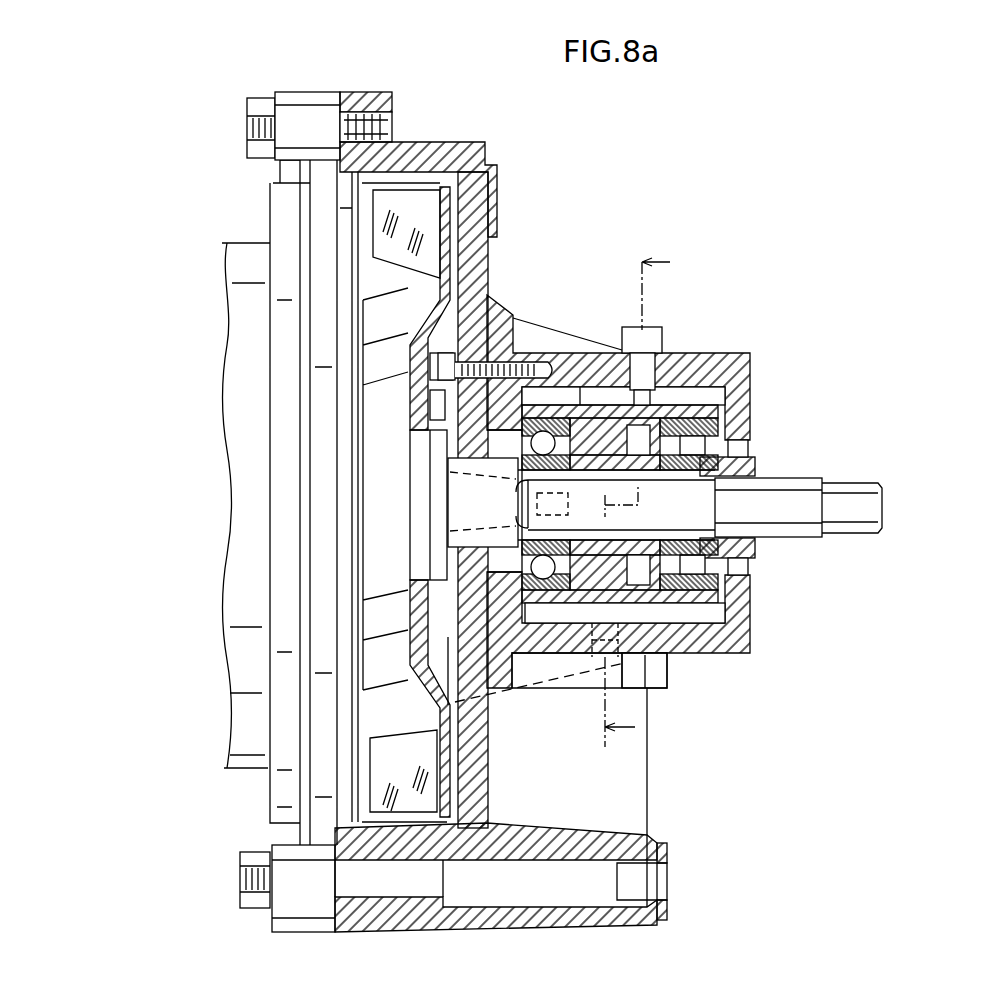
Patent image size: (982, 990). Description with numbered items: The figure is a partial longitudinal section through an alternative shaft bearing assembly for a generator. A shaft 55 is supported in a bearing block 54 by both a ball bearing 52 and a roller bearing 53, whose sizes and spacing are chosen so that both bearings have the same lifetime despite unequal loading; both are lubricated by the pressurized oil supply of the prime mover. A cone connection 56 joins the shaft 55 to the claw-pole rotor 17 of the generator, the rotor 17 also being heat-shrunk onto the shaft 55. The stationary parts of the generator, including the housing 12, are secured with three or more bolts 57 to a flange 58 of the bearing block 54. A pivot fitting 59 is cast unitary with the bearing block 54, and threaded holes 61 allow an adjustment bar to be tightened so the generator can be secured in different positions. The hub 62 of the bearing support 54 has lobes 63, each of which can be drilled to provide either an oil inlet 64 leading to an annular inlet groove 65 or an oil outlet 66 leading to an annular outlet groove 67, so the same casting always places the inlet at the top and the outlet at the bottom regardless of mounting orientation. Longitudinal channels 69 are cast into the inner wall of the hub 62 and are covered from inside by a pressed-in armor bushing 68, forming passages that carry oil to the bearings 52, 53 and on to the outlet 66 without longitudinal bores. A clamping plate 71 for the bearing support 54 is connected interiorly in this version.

The housing 12 is at (248, 505).
The claw-pole rotor 17 is at (380, 352).
The ball bearing 52 is at (556, 546).
The roller bearing 53 is at (690, 470).
The bearing block 54 is at (478, 298).
The shaft 55 is at (790, 500).
The cone connection 56 is at (480, 500).
The bolts 57 is at (262, 106).
The flange 58 is at (372, 102).
The pivot fitting 59 is at (455, 915).
The threaded holes 61 is at (500, 196).
The hub 62 is at (718, 375).
The lobes 63 is at (660, 340).
The oil inlet 64 is at (640, 376).
The annular inlet groove 65 is at (632, 476).
The oil outlet 66 is at (603, 672).
The annular outlet groove 67 is at (645, 672).
The armor bushing 68 is at (690, 625).
The longitudinal channels 69 is at (713, 398).
The clamping plate 71 is at (470, 640).